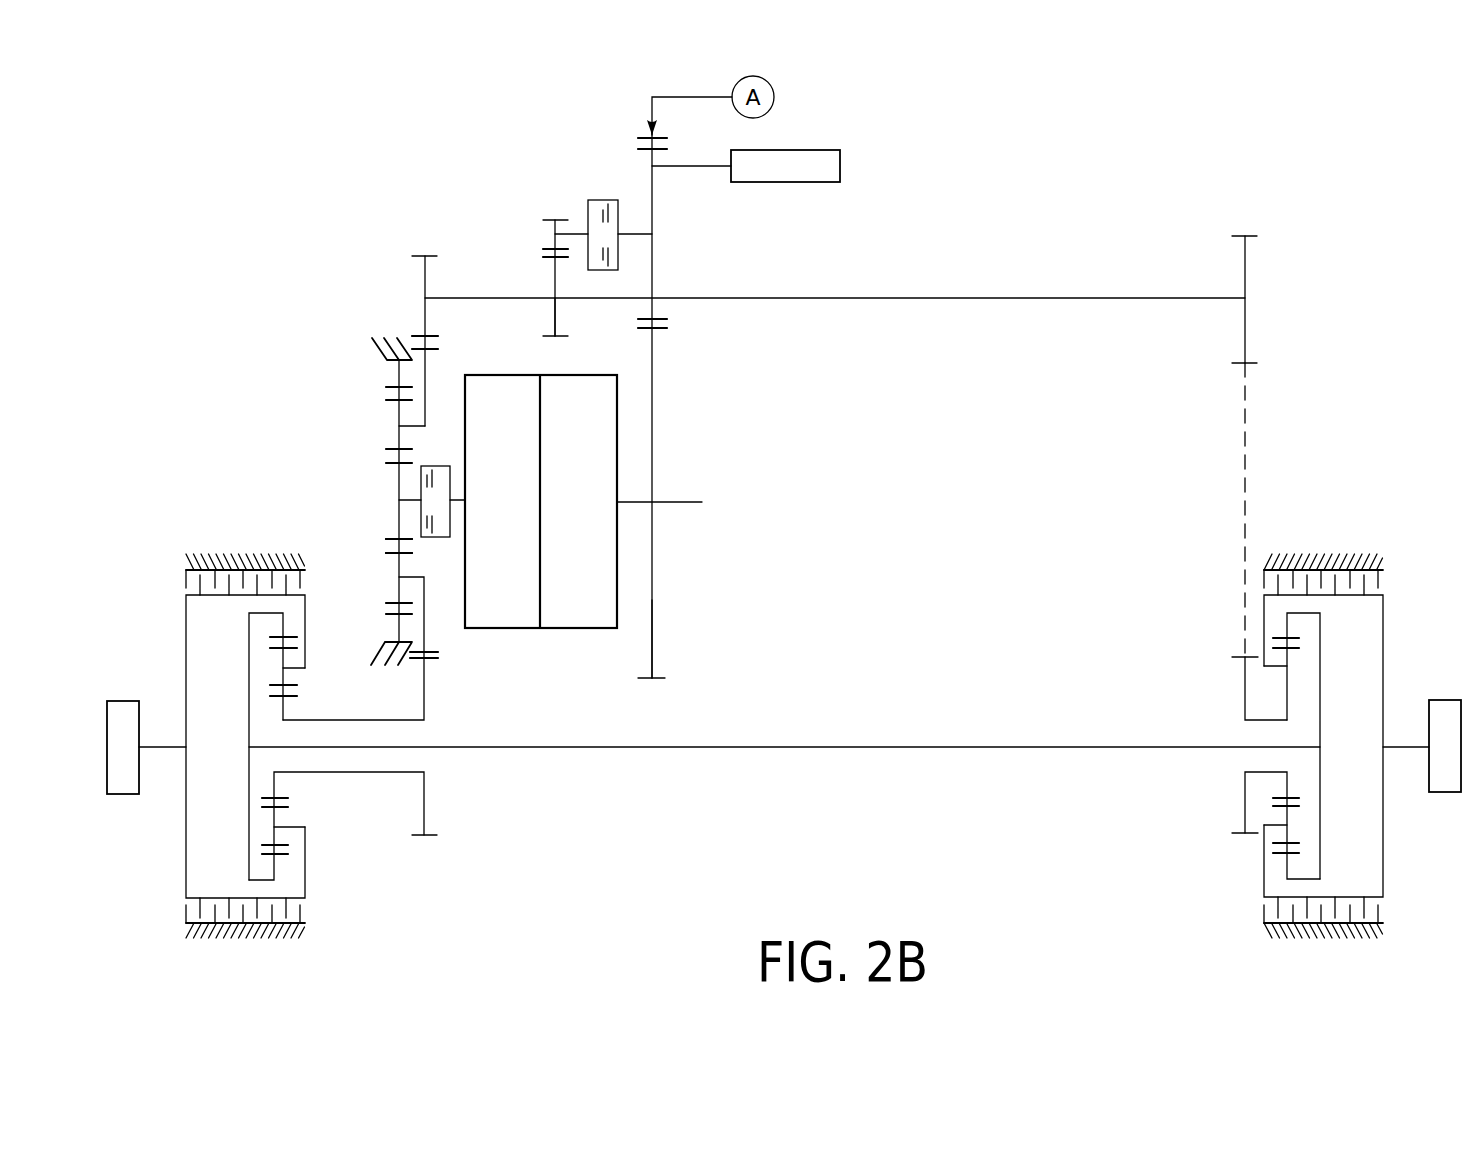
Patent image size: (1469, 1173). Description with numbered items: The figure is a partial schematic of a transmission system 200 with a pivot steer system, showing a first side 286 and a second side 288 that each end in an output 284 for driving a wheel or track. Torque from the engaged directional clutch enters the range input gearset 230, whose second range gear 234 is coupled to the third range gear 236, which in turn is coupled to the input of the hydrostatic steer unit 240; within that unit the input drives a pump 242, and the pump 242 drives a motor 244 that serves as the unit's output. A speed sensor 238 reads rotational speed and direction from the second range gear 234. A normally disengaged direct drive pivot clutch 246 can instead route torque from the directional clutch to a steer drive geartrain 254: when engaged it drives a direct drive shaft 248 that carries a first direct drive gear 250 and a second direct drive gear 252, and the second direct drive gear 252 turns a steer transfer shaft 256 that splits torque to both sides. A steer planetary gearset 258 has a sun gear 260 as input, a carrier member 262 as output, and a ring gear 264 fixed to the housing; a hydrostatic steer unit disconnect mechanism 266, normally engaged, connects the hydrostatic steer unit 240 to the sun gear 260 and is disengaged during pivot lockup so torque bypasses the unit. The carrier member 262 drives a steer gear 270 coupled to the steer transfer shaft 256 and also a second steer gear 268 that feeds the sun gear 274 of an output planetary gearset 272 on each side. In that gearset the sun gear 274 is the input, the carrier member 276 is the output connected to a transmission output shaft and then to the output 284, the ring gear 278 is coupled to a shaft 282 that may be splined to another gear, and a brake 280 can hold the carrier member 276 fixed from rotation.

The transmission system 200 is at (1357, 150).
The range input gearset 230 is at (673, 357).
The second range gear 234 is at (657, 203).
The third range gear 236 is at (652, 637).
The speed sensor 238 is at (842, 160).
The hydrostatic steer unit (HSU) 240 is at (617, 501).
The pump 242 is at (578, 470).
The motor 244 is at (503, 470).
The direct drive pivot clutch 246 is at (612, 188).
The direct drive shaft 248 is at (578, 232).
The first direct drive gear 250 is at (555, 241).
The second direct drive gear 252 is at (555, 278).
The steer drive geartrain 254 is at (1278, 315).
The steer transfer shaft 256 is at (1032, 298).
The steer planetary gearset 258 is at (307, 415).
The sun gear 260 is at (398, 478).
The carrier member 262 is at (393, 563).
The ring gear 264 is at (393, 375).
The hydrostatic steer unit disconnect mechanism 266 is at (443, 457).
The second steer gear 268 is at (425, 687).
The steer gear 270 is at (425, 278).
The output planetary gearset 272 is at (170, 628).
The sun gear 274 is at (290, 700).
The carrier member 276 is at (280, 658).
The ring gear 278 is at (283, 627).
The brake 280 is at (313, 563).
The shaft 282 is at (900, 747).
The output 284 is at (123, 702).
The first side 286 is at (198, 298).
The second side 288 is at (1393, 298).